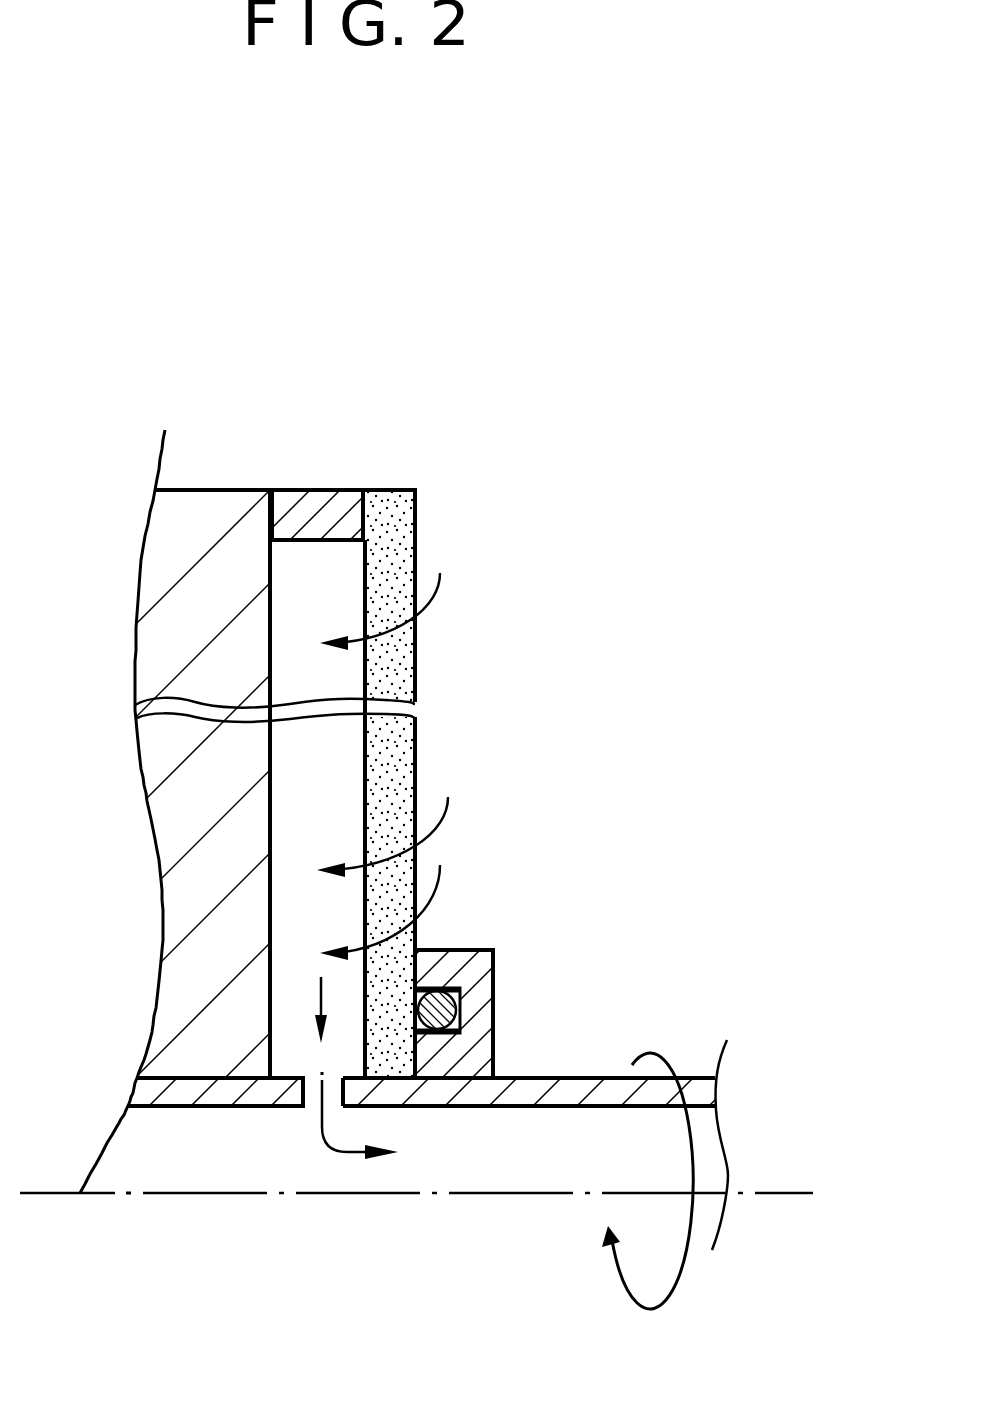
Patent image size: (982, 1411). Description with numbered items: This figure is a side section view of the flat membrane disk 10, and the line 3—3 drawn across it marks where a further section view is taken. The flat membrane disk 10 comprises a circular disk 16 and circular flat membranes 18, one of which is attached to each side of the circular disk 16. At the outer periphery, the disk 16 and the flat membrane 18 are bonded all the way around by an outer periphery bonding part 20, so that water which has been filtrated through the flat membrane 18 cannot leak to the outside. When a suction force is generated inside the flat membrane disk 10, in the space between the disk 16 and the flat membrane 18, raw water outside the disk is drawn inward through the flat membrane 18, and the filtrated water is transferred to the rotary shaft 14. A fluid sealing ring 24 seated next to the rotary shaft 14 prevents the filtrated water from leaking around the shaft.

The flat membrane disk 10 is at (640, 362).
The rotary shaft 14 is at (567, 1092).
The circular disk 16 is at (210, 490).
The flat membrane 18 is at (418, 536).
The outer periphery bonding part 20 is at (330, 515).
The fluid sealing ring 24 is at (483, 995).
The section line 3— 3 is at (322, 456).